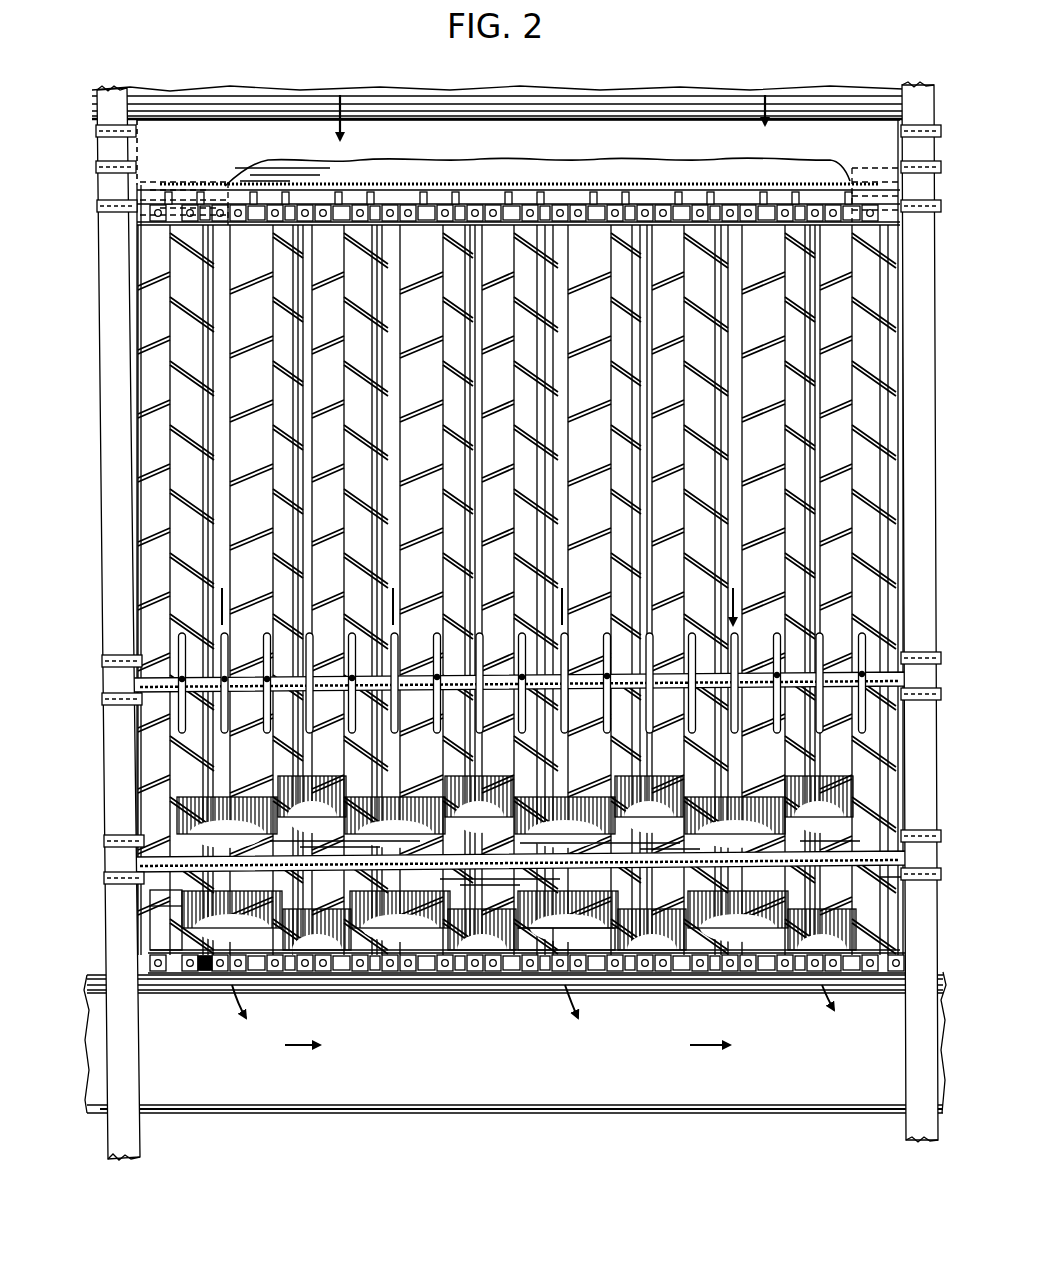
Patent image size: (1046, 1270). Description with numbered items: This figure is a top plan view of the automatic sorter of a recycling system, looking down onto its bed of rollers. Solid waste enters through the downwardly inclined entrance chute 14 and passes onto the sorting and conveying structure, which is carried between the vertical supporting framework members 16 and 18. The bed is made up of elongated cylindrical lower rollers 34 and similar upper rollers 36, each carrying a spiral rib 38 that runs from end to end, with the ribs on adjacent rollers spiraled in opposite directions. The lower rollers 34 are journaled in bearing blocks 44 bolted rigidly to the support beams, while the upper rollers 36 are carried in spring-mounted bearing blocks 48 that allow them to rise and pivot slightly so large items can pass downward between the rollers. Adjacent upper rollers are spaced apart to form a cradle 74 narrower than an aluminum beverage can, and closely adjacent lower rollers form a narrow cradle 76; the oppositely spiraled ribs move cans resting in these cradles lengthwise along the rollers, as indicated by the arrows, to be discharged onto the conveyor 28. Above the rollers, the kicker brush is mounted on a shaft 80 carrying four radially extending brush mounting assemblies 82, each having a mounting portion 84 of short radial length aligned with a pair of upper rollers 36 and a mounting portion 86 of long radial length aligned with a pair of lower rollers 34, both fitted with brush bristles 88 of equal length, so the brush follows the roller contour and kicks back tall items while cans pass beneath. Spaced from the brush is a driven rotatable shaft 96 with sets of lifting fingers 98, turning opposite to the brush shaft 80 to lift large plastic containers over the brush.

The entrance chute 14 is at (685, 135).
The vertical supporting framework member 16 is at (136, 134).
The vertical supporting framework member 18 is at (152, 905).
The conveyor 28 is at (550, 1085).
The lower roller 34 is at (492, 246).
The upper roller 36 is at (553, 246).
The spiral rib 38 is at (381, 188).
The bearing block 44 is at (168, 975).
The bearing block 48 is at (202, 973).
The cradle 74 is at (299, 246).
The narrow cradle 76 is at (221, 248).
The shaft 80 is at (856, 940).
The brush mounting assembly 82 is at (683, 878).
The mounting portion 84 is at (405, 930).
The mounting portion 86 is at (465, 930).
The brush bristles 88 is at (494, 930).
The driven rotatable shaft 96 is at (262, 692).
The lifting fingers 98 is at (398, 692).